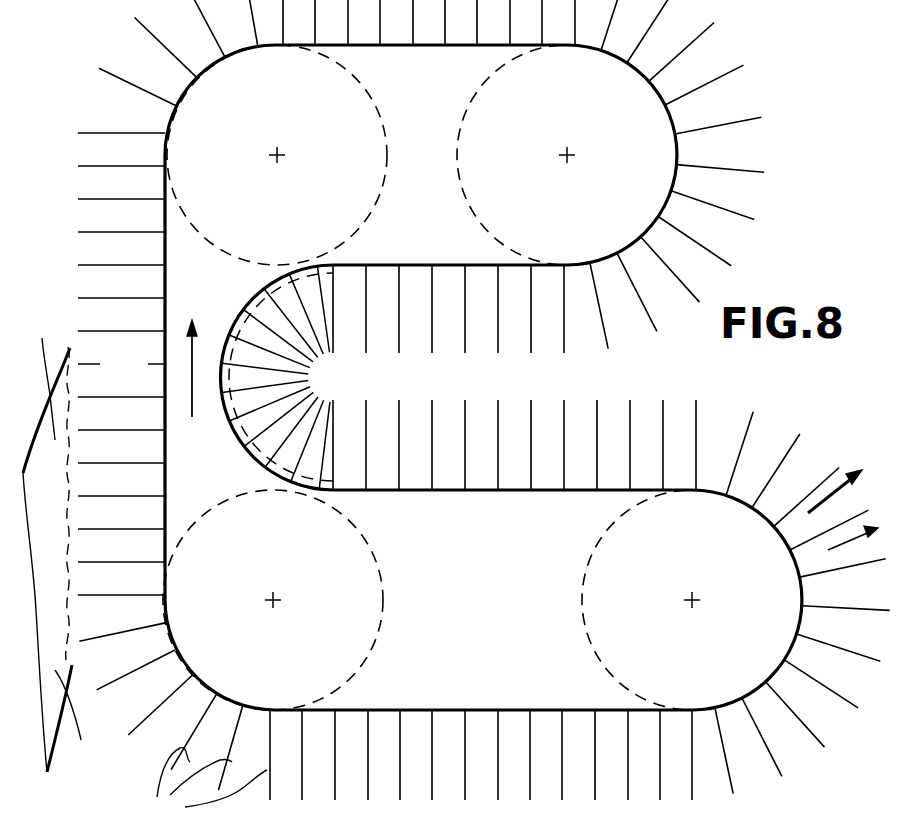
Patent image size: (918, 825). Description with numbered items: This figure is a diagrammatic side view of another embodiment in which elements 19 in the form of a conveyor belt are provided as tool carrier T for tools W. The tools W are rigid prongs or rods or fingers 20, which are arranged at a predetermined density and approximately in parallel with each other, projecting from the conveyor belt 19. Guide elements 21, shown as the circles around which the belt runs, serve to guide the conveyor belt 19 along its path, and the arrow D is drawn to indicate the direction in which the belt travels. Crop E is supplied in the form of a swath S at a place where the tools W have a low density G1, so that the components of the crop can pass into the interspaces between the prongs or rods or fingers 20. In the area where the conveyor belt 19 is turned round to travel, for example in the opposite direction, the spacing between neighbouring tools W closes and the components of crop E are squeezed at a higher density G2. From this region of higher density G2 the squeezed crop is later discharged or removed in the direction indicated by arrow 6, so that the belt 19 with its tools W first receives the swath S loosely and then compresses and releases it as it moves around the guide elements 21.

The conveyor belt 19 is at (428, 47).
The rigid prongs or rods or fingers 20 is at (693, 413).
The guide elements 21 is at (342, 198).
The arrow 6 is at (842, 476).
The swath S is at (47, 537).
The crop E is at (76, 721).
The tools W is at (204, 786).
The direction of travel D is at (201, 373).
The tool carrier T is at (481, 709).
The low density G1 is at (127, 367).
The higher density G2 is at (350, 377).